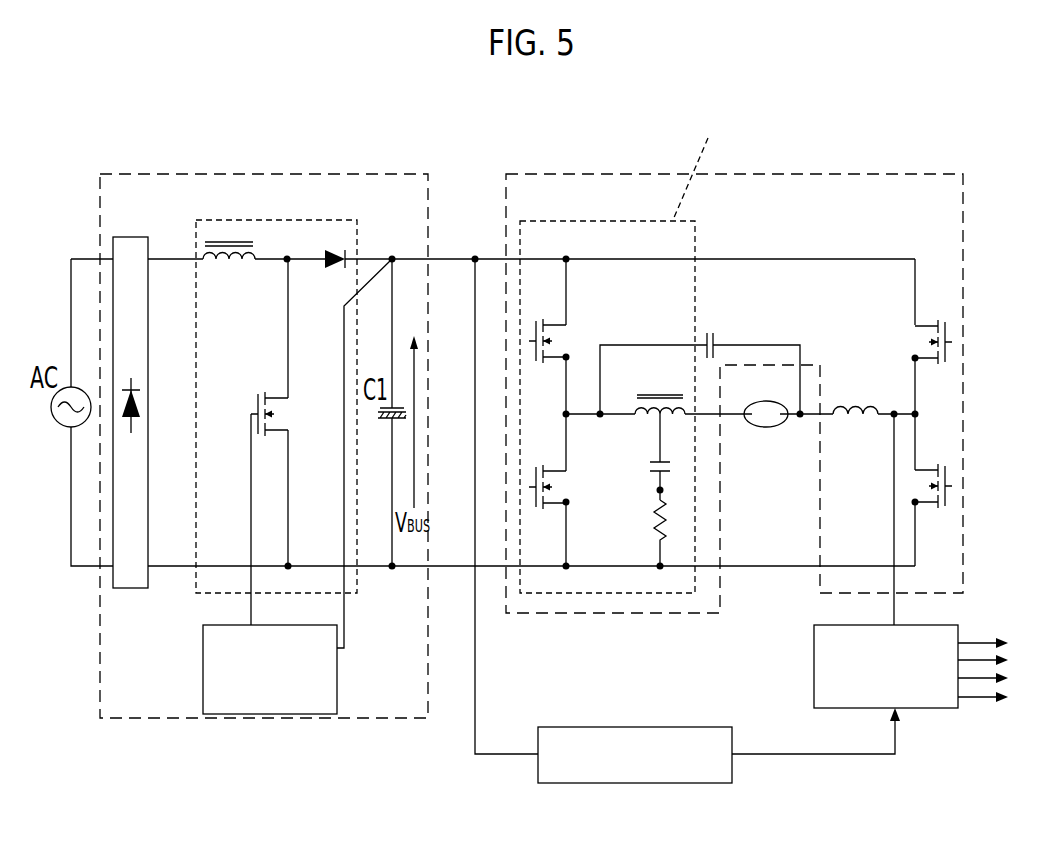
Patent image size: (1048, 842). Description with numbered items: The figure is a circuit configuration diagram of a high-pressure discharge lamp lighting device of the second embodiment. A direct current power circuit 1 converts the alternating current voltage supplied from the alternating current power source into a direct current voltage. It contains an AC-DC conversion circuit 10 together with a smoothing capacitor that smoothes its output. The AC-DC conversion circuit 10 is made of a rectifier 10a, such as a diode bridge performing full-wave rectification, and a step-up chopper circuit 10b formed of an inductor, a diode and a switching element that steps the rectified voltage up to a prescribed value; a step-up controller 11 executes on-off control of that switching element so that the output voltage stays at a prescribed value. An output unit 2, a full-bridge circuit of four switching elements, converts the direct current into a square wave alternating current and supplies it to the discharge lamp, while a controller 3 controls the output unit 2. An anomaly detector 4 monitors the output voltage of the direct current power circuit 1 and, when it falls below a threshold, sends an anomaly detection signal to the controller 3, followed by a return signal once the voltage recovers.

The direct current power circuit 1 is at (293, 173).
The output unit 2 is at (641, 173).
The controller 3 is at (928, 710).
The anomaly detector 4 is at (560, 783).
The AC-DC conversion circuit 10 is at (203, 107).
The rectifier 10a is at (130, 245).
The step-up chopper circuit 10b is at (218, 220).
The step-up controller 11 is at (205, 643).